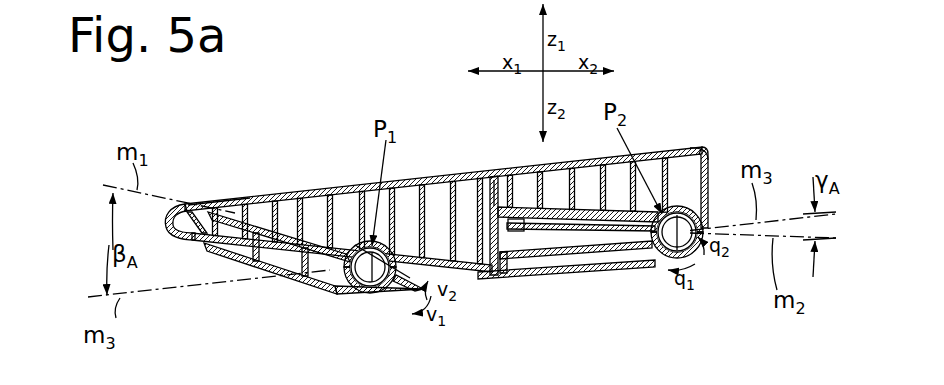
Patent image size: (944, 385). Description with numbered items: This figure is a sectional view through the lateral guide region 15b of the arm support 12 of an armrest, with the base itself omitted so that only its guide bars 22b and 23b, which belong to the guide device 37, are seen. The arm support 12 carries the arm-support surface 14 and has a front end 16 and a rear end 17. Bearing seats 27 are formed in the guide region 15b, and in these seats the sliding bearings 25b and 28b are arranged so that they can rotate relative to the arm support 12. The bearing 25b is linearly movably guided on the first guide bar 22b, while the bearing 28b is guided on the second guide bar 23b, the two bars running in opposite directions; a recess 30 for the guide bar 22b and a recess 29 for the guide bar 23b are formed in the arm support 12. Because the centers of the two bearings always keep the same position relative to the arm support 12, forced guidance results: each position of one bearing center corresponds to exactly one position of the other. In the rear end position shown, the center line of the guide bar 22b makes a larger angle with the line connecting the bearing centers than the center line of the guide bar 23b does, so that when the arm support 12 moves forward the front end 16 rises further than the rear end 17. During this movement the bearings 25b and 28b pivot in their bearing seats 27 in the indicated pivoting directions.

The arm support 12 is at (201, 202).
The arm-support surface 14 is at (335, 187).
The guide region 15b is at (491, 187).
The front end 16 is at (178, 201).
The rear end 17 is at (704, 133).
The first guide bar 22b is at (251, 236).
The second guide bar 23b is at (614, 243).
The first bearing 25b is at (386, 288).
The bearing seat 27 is at (677, 233).
The second bearing 28b is at (664, 271).
The recess 29 is at (525, 250).
The recess 30 is at (215, 245).
The guide device 37 is at (709, 264).